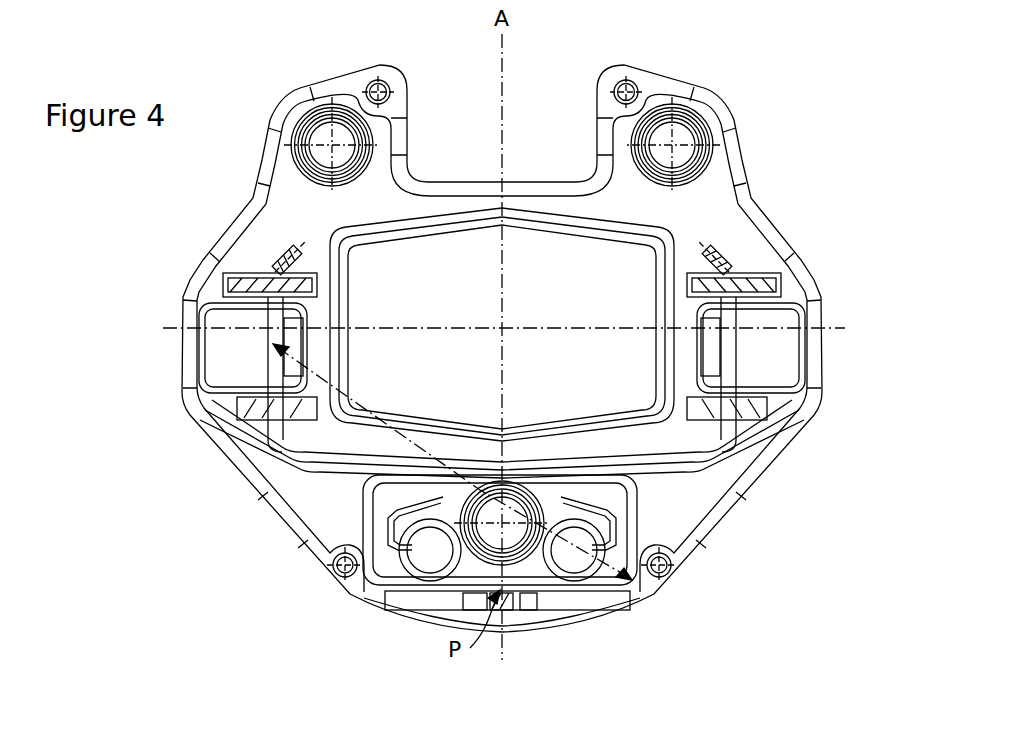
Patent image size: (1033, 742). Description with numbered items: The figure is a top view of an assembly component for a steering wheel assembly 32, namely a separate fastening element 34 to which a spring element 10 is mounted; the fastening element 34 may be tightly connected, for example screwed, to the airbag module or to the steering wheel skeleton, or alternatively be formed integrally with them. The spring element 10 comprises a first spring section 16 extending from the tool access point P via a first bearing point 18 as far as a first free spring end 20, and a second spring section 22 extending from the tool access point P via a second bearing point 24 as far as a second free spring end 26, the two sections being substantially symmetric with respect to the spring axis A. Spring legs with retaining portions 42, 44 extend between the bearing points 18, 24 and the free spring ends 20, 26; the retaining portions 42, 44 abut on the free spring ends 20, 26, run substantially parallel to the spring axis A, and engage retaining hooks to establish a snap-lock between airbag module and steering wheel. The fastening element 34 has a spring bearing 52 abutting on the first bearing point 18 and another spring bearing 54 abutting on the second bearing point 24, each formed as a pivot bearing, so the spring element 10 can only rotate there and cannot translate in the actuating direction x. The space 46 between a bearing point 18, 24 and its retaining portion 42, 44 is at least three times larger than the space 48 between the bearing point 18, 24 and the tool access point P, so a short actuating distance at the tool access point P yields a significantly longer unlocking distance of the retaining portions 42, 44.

The spring element 10 is at (323, 493).
The first spring section 16 is at (307, 473).
The first bearing point 18 is at (633, 580).
The first free spring end 20 is at (283, 258).
The second spring section 22 is at (656, 476).
The second bearing point 24 is at (368, 585).
The second free spring end 26 is at (717, 266).
The steering wheel assembly 32 is at (781, 112).
The fastening element 34 is at (700, 487).
The retaining portion 42 is at (281, 345).
The retaining portion 44 is at (732, 347).
The space 46 is at (362, 407).
The space 48 is at (573, 587).
The spring bearing 52 is at (633, 560).
The spring bearing 54 is at (387, 572).